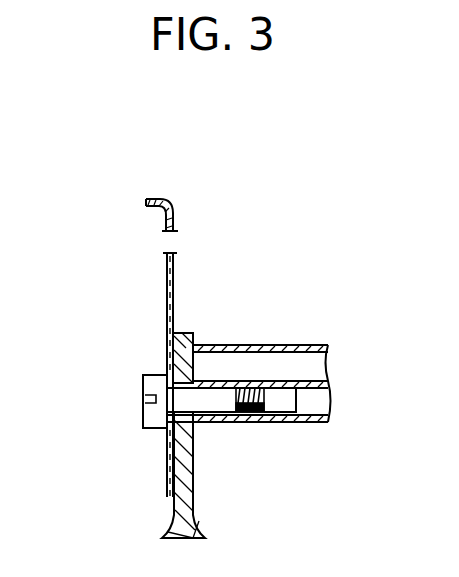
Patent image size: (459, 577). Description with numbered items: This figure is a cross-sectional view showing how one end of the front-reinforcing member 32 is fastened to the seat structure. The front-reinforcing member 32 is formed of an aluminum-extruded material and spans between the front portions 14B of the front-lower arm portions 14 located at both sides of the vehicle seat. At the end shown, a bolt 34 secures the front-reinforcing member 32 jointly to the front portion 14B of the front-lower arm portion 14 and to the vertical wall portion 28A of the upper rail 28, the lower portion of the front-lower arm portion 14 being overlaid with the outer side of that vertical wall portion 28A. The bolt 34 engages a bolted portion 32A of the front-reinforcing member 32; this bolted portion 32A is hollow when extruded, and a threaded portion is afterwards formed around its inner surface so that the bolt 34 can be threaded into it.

The front-lower arm portion 14 is at (136, 272).
The front portion 14B is at (173, 282).
The upper rail 28 is at (200, 512).
The vertical wall portion 28A is at (182, 454).
The front-reinforcing member 32 is at (308, 340).
The bolted portion 32A is at (248, 386).
The bolt 34 is at (153, 414).